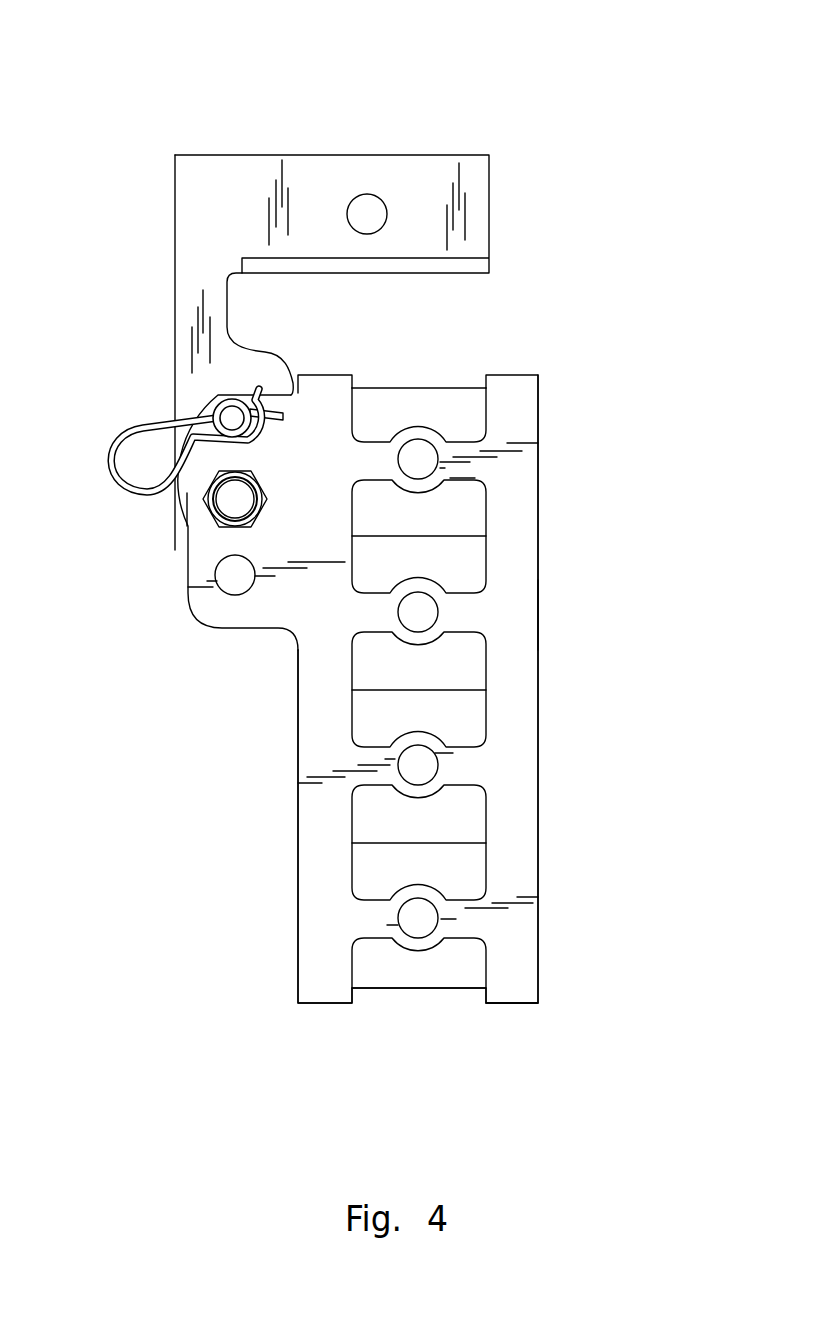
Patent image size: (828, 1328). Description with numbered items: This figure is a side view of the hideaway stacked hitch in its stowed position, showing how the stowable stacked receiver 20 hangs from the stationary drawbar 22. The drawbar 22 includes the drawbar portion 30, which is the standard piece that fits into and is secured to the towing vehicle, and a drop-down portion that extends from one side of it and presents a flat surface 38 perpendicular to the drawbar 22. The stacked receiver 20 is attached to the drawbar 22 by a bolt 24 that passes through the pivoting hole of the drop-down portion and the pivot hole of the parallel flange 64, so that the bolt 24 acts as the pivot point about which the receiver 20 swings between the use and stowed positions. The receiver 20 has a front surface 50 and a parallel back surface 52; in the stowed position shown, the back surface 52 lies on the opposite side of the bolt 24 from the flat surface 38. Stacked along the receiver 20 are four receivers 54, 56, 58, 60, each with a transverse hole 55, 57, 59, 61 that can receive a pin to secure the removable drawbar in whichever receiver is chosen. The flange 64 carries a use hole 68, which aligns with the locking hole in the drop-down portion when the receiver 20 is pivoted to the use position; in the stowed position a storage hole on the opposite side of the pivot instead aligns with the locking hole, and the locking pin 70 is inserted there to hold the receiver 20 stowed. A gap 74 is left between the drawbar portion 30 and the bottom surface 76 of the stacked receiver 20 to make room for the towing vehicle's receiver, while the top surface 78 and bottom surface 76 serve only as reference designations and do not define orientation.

The stowable stacked receiver 20 is at (318, 1022).
The stationary drawbar 22 is at (208, 135).
The bolt 24 is at (230, 502).
The drawbar portion 30 is at (423, 200).
The flat surface 38 is at (175, 210).
The front surface 50 is at (540, 837).
The back surface 52 is at (298, 763).
The receiver 54 is at (547, 934).
The transverse hole 55 is at (418, 917).
The receiver 56 is at (547, 767).
The transverse hole 57 is at (418, 765).
The receiver 58 is at (547, 616).
The transverse hole 59 is at (418, 612).
The receiver 60 is at (547, 460).
The transverse hole 61 is at (418, 457).
The parallel flange 64 is at (200, 552).
The use hole 68 is at (237, 587).
The locking pin 70 is at (232, 416).
The gap 74 is at (452, 324).
The bottom surface 76 is at (512, 374).
The top surface 78 is at (512, 1005).